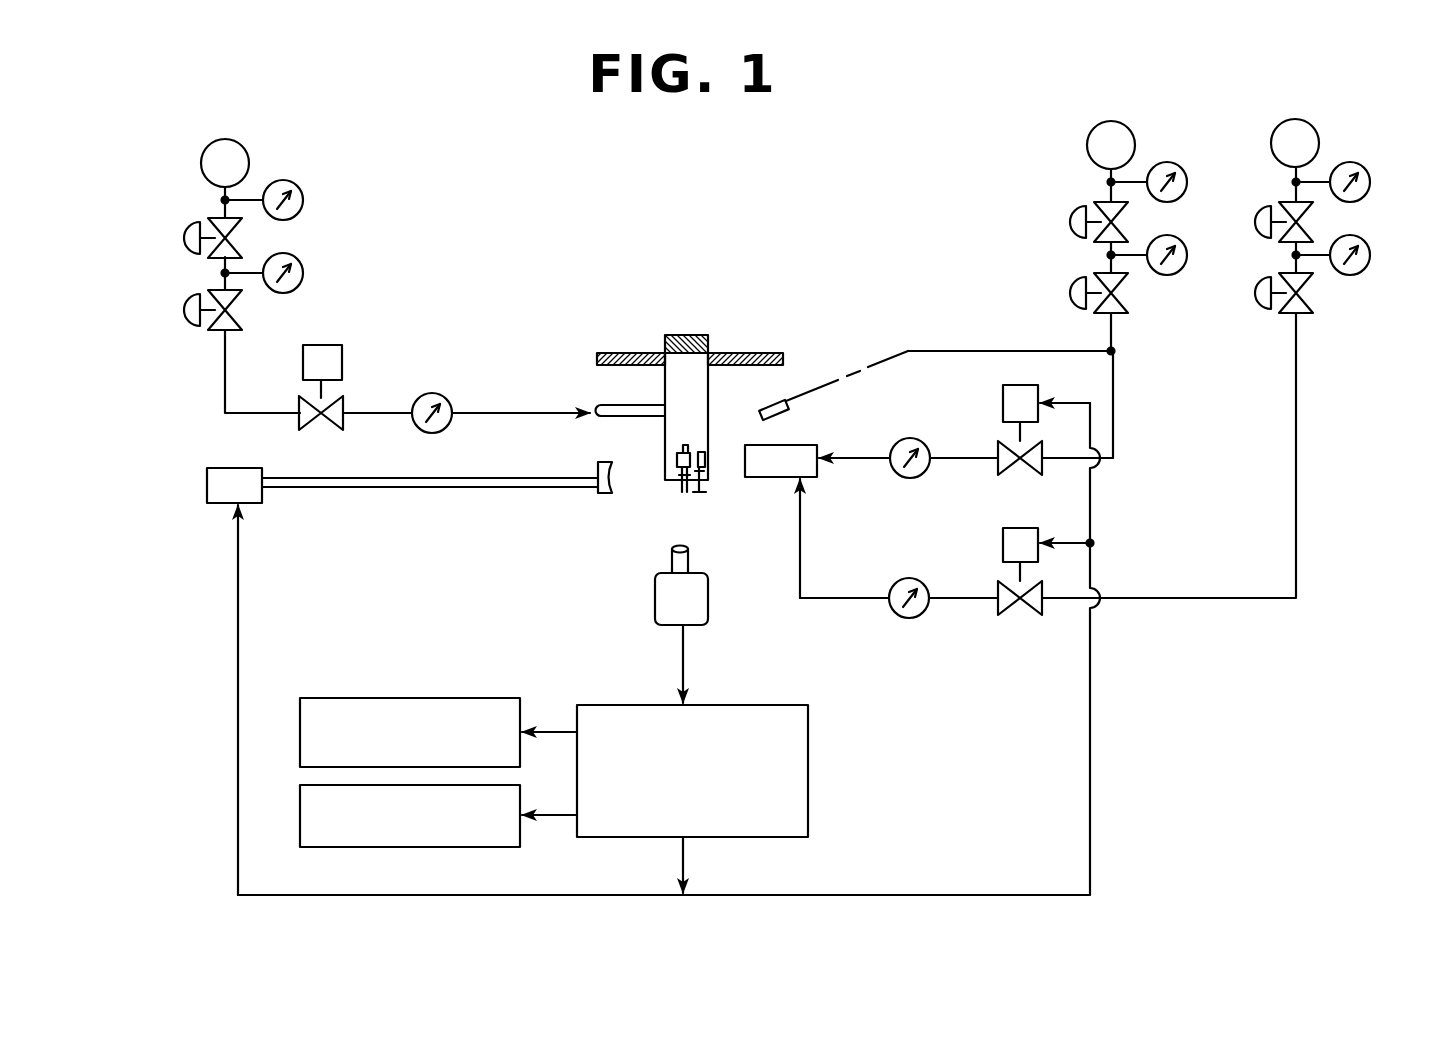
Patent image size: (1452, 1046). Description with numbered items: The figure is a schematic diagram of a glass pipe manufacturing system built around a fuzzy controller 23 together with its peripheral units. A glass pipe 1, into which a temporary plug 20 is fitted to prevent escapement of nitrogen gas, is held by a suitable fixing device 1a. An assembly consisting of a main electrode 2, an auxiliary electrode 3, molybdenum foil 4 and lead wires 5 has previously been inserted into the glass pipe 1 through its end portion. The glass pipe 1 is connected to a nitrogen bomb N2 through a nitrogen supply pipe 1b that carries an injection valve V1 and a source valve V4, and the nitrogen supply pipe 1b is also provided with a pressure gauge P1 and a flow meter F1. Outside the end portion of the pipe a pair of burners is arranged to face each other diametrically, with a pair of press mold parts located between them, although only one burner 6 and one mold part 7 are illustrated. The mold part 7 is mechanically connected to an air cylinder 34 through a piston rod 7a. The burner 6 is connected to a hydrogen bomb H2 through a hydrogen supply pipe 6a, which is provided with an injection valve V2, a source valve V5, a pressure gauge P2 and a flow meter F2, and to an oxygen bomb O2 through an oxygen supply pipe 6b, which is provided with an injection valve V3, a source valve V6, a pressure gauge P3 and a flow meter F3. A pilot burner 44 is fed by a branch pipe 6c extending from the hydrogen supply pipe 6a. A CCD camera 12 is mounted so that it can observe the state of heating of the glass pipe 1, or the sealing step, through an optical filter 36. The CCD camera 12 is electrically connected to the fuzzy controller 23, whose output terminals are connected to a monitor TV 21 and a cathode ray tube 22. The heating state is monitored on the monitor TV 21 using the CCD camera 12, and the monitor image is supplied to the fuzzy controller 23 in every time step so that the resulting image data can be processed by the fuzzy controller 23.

The glass pipe 1 is at (709, 392).
The fixing device 1a is at (762, 353).
The nitrogen supply pipe 1b is at (517, 410).
The main electrode 2 is at (677, 460).
The auxiliary electrode 3 is at (701, 455).
The molybdenum foil 4 is at (684, 478).
The lead wires 5 is at (706, 490).
The burner 6 is at (765, 479).
The hydrogen supply pipe 6a is at (1113, 413).
The oxygen supply pipe 6b is at (1296, 470).
The branch pipe 6c is at (1007, 351).
The mold part 7 is at (603, 495).
The piston rod 7a is at (511, 478).
The CCD camera 12 is at (655, 605).
The temporary plug 20 is at (681, 335).
The monitor TV 21 is at (406, 698).
The cathode ray tube 22 is at (430, 847).
The fuzzy controller 23 is at (810, 777).
The air cylinder 34 is at (207, 472).
The optical filter 36 is at (672, 553).
The pilot burner 44 is at (790, 398).
The nitrogen bomb N2 is at (225, 163).
The hydrogen bomb H2 is at (1111, 145).
The oxygen bomb O2 is at (1295, 143).
The pressure gauge P1 is at (304, 200).
The pressure gauge P2 is at (1188, 180).
The pressure gauge P3 is at (1369, 266).
The flow meter F1 is at (432, 393).
The flow meter F2 is at (906, 438).
The flow meter F3 is at (907, 578).
The injection valve V1 is at (343, 406).
The injection valve V2 is at (1000, 444).
The injection valve V3 is at (1002, 588).
The source valve V4 is at (180, 246).
The source valve V5 is at (1066, 214).
The source valve V6 is at (1314, 305).